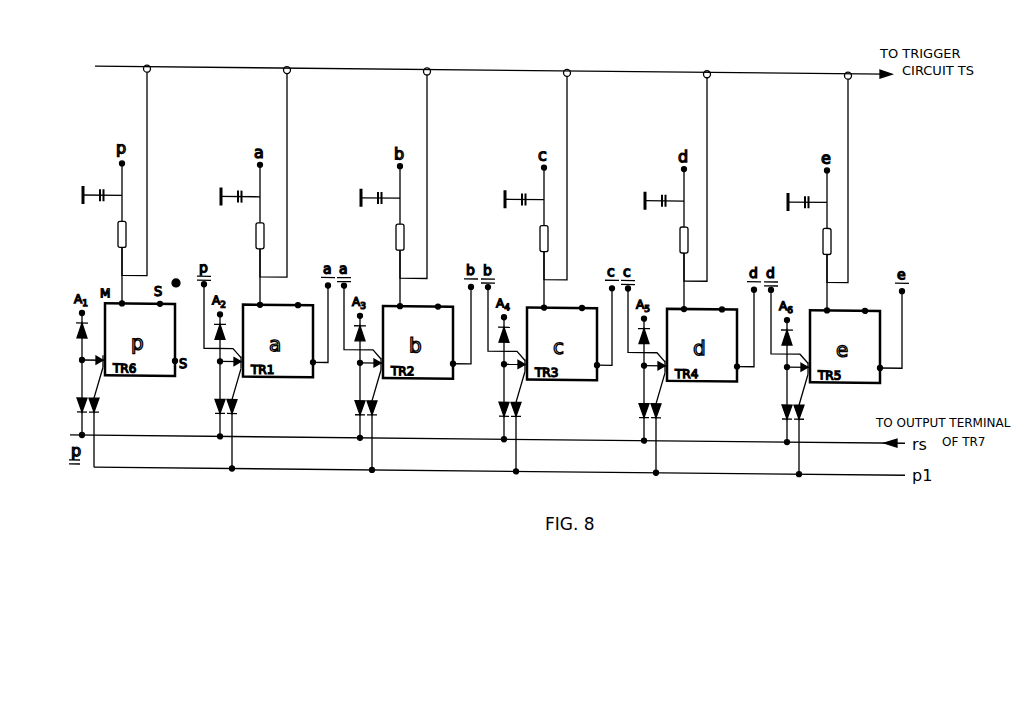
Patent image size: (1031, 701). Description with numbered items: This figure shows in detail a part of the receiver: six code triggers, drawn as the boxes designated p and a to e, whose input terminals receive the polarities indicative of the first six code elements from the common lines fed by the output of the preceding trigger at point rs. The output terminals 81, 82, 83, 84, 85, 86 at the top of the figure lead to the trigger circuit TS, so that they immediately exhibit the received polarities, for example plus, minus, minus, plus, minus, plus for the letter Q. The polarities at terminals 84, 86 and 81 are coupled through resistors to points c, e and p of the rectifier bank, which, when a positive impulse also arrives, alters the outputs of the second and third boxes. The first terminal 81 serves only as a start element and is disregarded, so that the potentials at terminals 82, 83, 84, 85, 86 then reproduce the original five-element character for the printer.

The output terminal 81 is at (138, 161).
The output terminal 82 is at (277, 163).
The output terminal 83 is at (417, 164).
The output terminal 84 is at (559, 166).
The output terminal 85 is at (699, 167).
The output terminal 86 is at (841, 168).